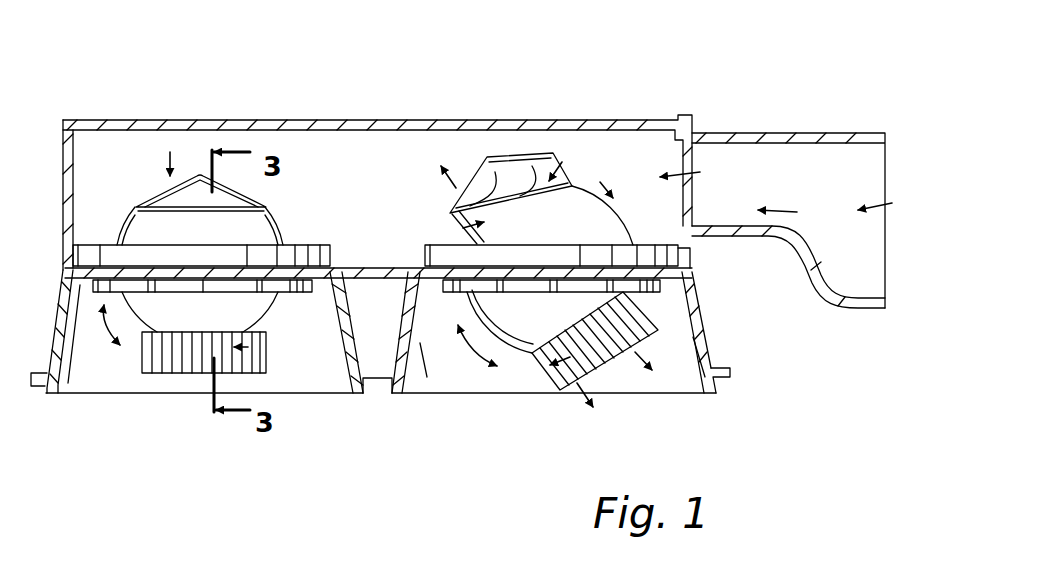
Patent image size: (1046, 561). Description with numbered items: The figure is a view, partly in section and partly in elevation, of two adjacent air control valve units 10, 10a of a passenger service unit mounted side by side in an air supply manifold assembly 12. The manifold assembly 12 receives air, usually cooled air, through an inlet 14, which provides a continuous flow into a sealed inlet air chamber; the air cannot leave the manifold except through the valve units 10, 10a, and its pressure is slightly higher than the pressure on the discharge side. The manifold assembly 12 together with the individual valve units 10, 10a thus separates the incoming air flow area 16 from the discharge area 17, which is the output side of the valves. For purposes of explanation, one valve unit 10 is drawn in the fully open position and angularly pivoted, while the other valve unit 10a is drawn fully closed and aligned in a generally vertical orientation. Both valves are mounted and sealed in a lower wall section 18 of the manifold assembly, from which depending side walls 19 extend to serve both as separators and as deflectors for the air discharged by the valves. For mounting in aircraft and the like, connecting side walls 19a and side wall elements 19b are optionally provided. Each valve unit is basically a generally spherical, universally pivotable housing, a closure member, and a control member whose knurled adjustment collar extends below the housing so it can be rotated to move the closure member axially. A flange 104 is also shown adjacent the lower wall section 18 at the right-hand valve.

The air control valve unit 10 is at (640, 118).
The air control valve unit 10a is at (160, 223).
The air supply manifold assembly 12 is at (402, 120).
The inlet 14 is at (750, 157).
The incoming air flow area 16 is at (360, 163).
The discharge area 17 is at (327, 370).
The lower wall section 18 is at (77, 252).
The depending side walls 19 is at (62, 330).
The connecting side walls 19a is at (382, 387).
The side wall elements 19b is at (33, 385).
The flange 104 is at (687, 252).